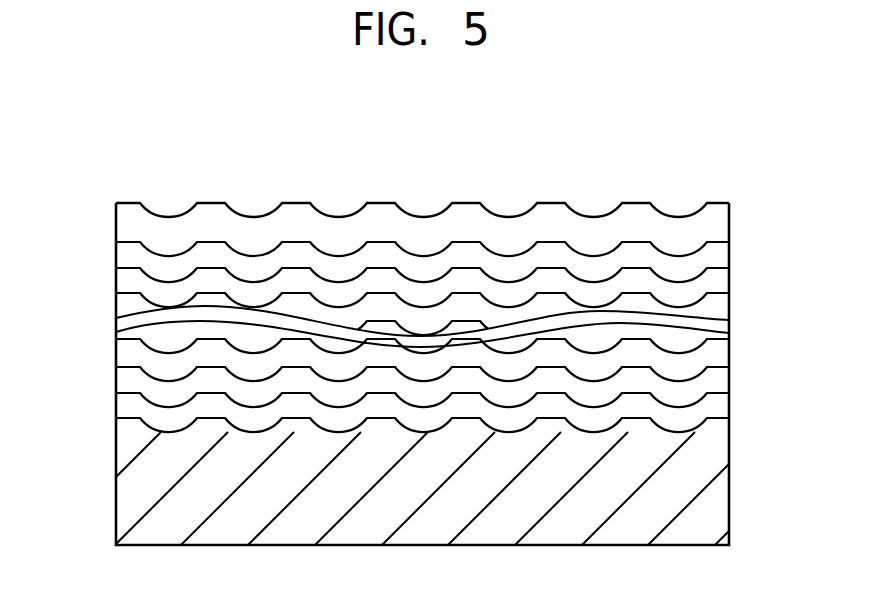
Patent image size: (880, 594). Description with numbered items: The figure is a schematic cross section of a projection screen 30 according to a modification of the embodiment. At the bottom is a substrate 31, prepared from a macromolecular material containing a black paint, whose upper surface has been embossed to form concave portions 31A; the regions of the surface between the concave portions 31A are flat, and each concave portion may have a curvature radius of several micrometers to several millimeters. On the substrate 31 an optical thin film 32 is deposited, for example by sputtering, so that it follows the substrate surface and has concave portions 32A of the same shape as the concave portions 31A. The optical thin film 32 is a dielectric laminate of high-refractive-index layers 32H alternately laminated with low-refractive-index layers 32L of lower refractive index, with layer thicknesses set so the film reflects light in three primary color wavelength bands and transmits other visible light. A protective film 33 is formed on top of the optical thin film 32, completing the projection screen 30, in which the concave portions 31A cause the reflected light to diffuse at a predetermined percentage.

The projection screen 30 is at (656, 176).
The substrate 31 is at (717, 490).
The concave portions 31A is at (163, 437).
The optical thin film 32 is at (496, 337).
The high-refractive-index layers 32H is at (718, 256).
The low-refractive-index layers 32L is at (718, 284).
The concave portions 32A is at (163, 404).
The protective film 33 is at (716, 220).